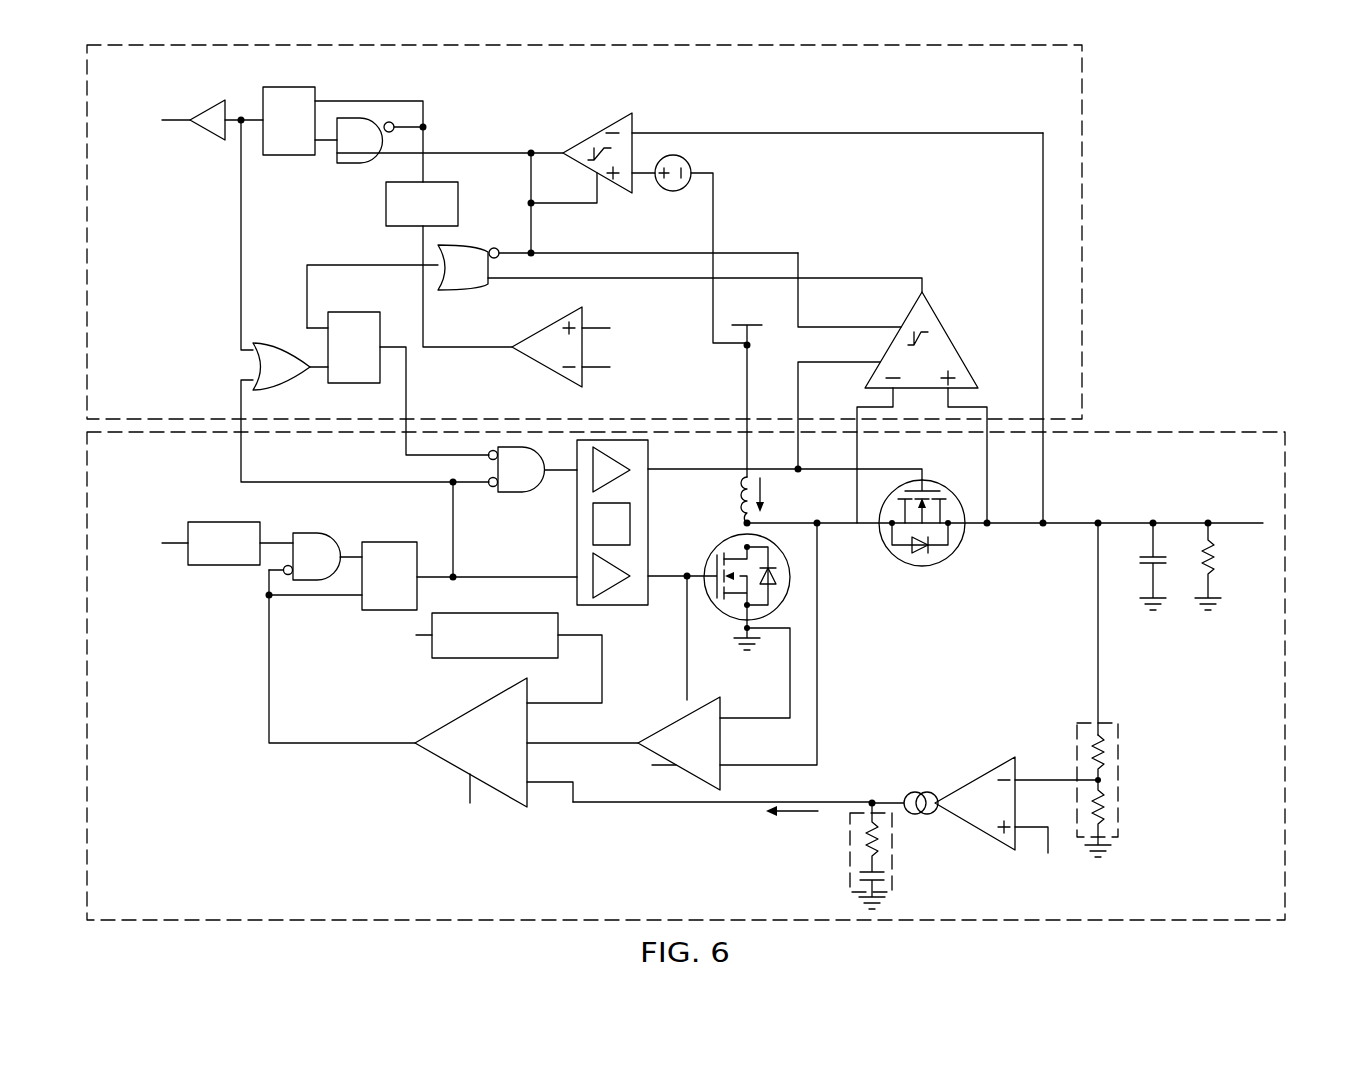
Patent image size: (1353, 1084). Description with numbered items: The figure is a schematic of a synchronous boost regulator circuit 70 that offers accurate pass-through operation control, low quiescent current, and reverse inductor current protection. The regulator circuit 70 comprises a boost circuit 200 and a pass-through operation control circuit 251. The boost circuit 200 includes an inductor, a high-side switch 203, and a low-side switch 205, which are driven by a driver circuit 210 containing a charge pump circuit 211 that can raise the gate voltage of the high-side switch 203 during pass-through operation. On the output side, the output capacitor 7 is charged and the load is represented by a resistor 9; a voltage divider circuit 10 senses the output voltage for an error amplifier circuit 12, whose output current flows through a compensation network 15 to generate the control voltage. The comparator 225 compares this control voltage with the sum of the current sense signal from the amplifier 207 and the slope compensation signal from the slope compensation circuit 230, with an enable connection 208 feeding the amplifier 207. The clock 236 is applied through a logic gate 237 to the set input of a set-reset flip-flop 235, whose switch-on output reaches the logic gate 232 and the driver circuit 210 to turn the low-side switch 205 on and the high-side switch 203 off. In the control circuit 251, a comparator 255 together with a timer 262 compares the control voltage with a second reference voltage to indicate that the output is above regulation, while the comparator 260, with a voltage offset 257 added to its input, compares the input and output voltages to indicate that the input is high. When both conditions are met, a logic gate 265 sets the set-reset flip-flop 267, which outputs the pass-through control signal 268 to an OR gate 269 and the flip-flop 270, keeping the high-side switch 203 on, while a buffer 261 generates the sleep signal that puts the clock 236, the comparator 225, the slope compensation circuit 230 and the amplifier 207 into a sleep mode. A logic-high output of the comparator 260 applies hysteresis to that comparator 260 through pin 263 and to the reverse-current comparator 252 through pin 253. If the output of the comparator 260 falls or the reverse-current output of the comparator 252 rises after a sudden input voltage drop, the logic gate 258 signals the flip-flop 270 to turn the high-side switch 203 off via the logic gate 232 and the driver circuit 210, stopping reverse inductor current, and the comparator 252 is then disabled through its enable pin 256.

The boost regulator circuit 70 is at (1252, 73).
The pass-through operation control circuit 251 is at (1083, 219).
The boost circuit 200 is at (1175, 432).
The buffer 261 is at (206, 109).
The S-R flip-flop 267 is at (285, 87).
The NAND gate 265 is at (356, 165).
The timer 262 is at (386, 204).
The comparator 260 is at (596, 128).
The pin 263 is at (600, 190).
The voltage offset 257 is at (673, 192).
The logic gate 258 is at (466, 245).
The comparator 255 is at (546, 326).
The OR gate 269 is at (280, 343).
The flip-flop 270 is at (357, 311).
The PASSTHROUGH control signal 268 is at (240, 331).
The pin 253 is at (870, 327).
The enable pin 256 is at (840, 362).
The comparator 252 is at (955, 338).
The logic gate 232 is at (516, 493).
The clock 236 is at (228, 522).
The logic gate 237 is at (322, 534).
The S-R flip-flop 235 is at (395, 542).
The charge pump circuit 211 is at (593, 521).
The driver circuit 210 is at (651, 491).
The low-side switch 205 is at (720, 546).
The high-side switch 203 is at (951, 556).
The slope compensation circuit 230 is at (498, 613).
The comparator 225 is at (471, 705).
The enable signal line 208 is at (686, 669).
The amplifier 207 is at (668, 722).
The error amplifier circuit 12 is at (976, 778).
The voltage divider circuit 10 is at (1120, 781).
The compensation network 15 is at (894, 851).
The capacitor 7 is at (1162, 566).
The resistor 9 is at (1216, 570).